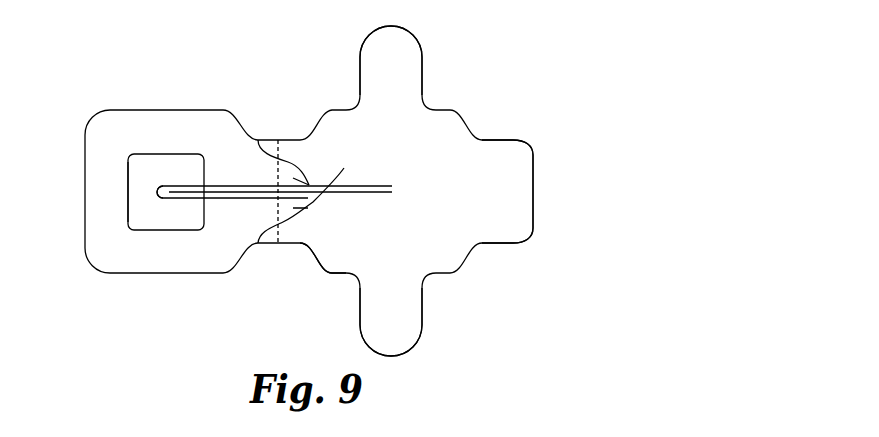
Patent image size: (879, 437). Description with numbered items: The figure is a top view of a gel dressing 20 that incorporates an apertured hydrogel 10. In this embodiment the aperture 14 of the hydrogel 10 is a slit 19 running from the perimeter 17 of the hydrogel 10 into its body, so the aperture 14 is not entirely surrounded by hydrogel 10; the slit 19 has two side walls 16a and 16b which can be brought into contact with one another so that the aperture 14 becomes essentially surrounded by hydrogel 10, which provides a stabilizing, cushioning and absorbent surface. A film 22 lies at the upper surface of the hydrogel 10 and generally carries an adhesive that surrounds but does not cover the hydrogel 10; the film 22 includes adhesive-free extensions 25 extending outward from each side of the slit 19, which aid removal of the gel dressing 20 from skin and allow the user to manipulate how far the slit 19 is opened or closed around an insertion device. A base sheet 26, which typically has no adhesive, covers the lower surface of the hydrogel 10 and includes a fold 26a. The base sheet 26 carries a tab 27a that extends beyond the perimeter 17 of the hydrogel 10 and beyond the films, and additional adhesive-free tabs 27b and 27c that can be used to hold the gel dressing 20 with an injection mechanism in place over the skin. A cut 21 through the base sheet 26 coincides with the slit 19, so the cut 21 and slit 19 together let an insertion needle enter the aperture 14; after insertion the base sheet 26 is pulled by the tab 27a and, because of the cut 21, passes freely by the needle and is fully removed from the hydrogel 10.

The apertured hydrogel 10 is at (137, 177).
The aperture 14 is at (182, 198).
The side wall 16a is at (254, 200).
The side wall 16b is at (210, 180).
The perimeter 17 is at (127, 212).
The slit 19 is at (167, 197).
The gel dressing 20 is at (468, 55).
The cut 21 is at (370, 193).
The film 22 is at (170, 155).
The adhesive-free extensions 25 is at (293, 178).
The base sheet 26 is at (348, 263).
The fold 26a is at (288, 215).
The tab 27a is at (507, 152).
The tab 27b is at (372, 58).
The tab 27c is at (407, 335).